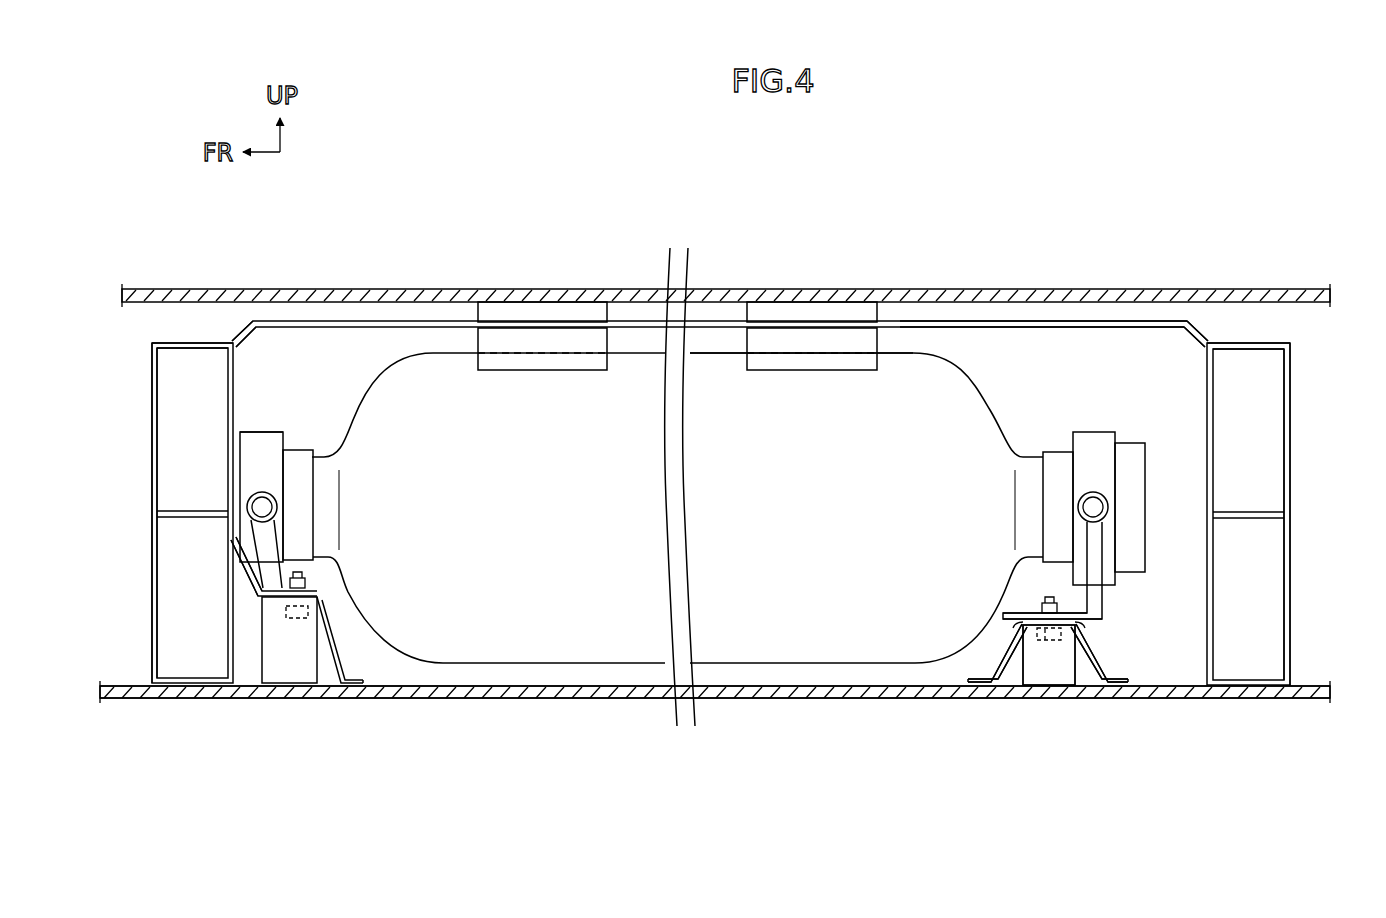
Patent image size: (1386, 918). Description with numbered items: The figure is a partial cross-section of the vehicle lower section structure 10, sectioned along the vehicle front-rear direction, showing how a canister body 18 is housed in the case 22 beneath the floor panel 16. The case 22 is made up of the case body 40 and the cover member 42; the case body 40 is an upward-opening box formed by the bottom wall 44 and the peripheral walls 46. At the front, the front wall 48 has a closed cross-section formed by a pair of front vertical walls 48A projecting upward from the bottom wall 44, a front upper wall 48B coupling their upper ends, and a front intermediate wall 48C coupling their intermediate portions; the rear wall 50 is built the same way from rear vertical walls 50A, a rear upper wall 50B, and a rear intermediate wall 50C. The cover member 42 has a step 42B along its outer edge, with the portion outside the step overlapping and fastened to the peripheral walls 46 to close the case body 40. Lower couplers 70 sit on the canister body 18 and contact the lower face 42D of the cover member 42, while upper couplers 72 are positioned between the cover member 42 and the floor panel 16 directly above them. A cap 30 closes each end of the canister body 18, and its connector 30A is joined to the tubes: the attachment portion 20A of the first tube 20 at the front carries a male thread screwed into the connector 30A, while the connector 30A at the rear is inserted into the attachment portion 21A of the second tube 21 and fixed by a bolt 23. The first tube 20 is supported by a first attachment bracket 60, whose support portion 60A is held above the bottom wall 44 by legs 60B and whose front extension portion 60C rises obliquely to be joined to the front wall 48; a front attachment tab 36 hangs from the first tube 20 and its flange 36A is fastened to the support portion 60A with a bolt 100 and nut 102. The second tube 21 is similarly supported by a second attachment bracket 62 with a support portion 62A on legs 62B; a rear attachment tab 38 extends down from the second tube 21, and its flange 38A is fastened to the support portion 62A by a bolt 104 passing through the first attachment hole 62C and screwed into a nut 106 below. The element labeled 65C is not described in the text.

The vehicle lower section structure 10 is at (158, 245).
The floor panel 16 is at (980, 289).
The canister body 18 is at (912, 348).
The first tube 20 is at (258, 486).
The attachment portion 20A is at (277, 432).
The second tube 21 is at (1095, 491).
The attachment portion 21A is at (1105, 432).
The case 22 is at (143, 325).
The bolt 23 is at (1132, 443).
The cap 30 is at (392, 397).
The connector 30A is at (300, 450).
The front attachment tab 36 is at (248, 530).
The flange 36A is at (317, 586).
The rear attachment tab 38 is at (1104, 552).
The flange 38A is at (1003, 615).
The case body 40 is at (162, 765).
The cover member 42 is at (330, 322).
The step 42B is at (245, 336).
The lower face 42D is at (1045, 321).
The bottom wall 44 is at (116, 702).
The peripheral wall 46 is at (145, 685).
The front wall 48 is at (152, 487).
The front vertical wall 48A is at (228, 400).
The front upper wall 48B is at (195, 343).
The front intermediate wall 48C is at (192, 518).
The rear wall 50 is at (1292, 493).
The rear vertical wall 50A is at (1292, 403).
The rear upper wall 50B is at (1258, 343).
The rear intermediate wall 50C is at (1248, 512).
The first attachment bracket 60 is at (258, 668).
The support portion 60A is at (296, 620).
The leg 60B is at (262, 686).
The front extension portion 60C is at (250, 582).
The second attachment bracket 62 is at (1093, 690).
The support portion 62A is at (1023, 652).
The leg 62B is at (970, 674).
The first attachment hole 62C is at (1050, 640).
The rear support tab 65C is at (1082, 626).
The lower coupler 70 is at (607, 345).
The upper coupler 72 is at (478, 312).
The bolt 100 is at (302, 580).
The nut 102 is at (305, 615).
The bolt 104 is at (1045, 603).
The nut 106 is at (1045, 640).